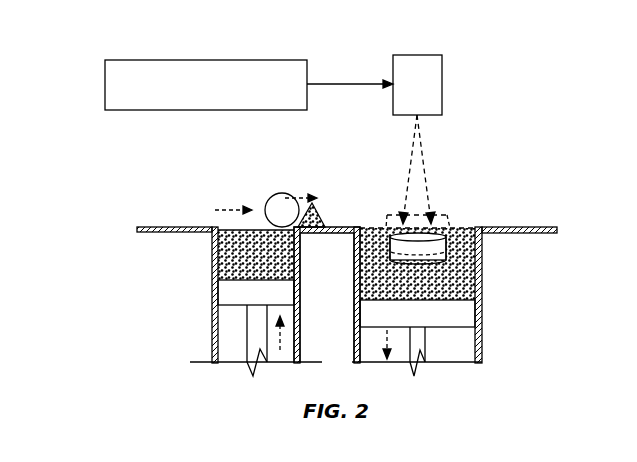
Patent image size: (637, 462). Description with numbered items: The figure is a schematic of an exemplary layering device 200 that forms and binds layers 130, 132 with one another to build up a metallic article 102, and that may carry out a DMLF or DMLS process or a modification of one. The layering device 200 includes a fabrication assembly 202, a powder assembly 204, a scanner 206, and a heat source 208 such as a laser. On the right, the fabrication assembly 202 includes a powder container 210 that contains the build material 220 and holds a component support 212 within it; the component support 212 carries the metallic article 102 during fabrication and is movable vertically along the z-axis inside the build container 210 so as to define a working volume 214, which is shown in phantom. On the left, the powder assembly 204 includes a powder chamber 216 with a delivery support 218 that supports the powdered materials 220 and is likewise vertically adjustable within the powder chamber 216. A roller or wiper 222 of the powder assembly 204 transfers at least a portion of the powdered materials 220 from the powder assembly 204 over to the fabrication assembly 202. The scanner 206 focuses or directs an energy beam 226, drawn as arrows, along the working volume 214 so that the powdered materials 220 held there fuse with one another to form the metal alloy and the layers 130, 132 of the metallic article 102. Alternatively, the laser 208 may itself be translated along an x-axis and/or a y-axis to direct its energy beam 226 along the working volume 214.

The layering device 200 is at (523, 80).
The fabrication assembly 202 is at (514, 292).
The powder assembly 204 is at (146, 262).
The scanner 206 is at (402, 96).
The heat source 208 is at (190, 96).
The powder container 210 is at (353, 283).
The component support 212 is at (463, 312).
The working volume 214 is at (474, 216).
The powder chamber 216 is at (213, 268).
The delivery support 218 is at (228, 290).
The powdered materials 220 is at (233, 258).
The roller 222 is at (283, 193).
The energy beam 226 is at (410, 143).
The metallic article 102 is at (384, 215).
The layer 132 is at (449, 214).
The layer 130 is at (438, 248).